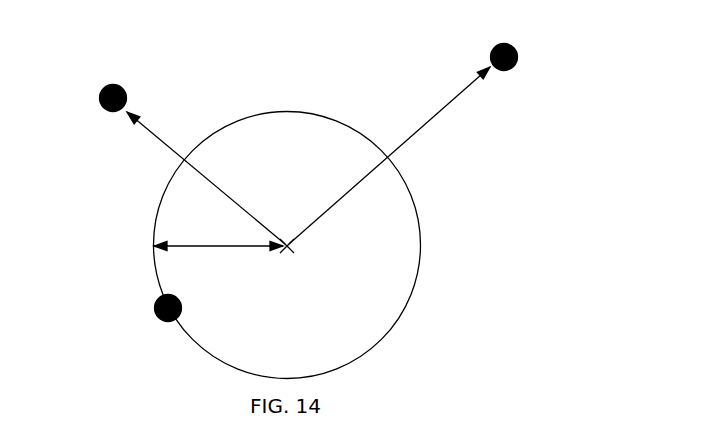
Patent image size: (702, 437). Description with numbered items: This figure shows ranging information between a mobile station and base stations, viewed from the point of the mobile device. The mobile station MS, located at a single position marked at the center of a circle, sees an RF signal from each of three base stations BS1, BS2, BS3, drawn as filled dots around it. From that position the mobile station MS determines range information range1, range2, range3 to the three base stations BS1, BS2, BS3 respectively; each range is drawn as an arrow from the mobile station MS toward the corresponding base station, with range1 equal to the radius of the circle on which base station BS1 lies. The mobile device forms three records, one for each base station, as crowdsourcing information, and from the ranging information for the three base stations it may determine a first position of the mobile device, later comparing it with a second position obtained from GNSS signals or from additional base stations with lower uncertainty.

The mobile station MS is at (285, 229).
The first base station BS1 is at (145, 318).
The second base station BS2 is at (91, 94).
The third base station BS3 is at (518, 45).
The range information to first base station range1 is at (218, 234).
The range information to second base station range2 is at (189, 178).
The range information to third base station range3 is at (389, 155).